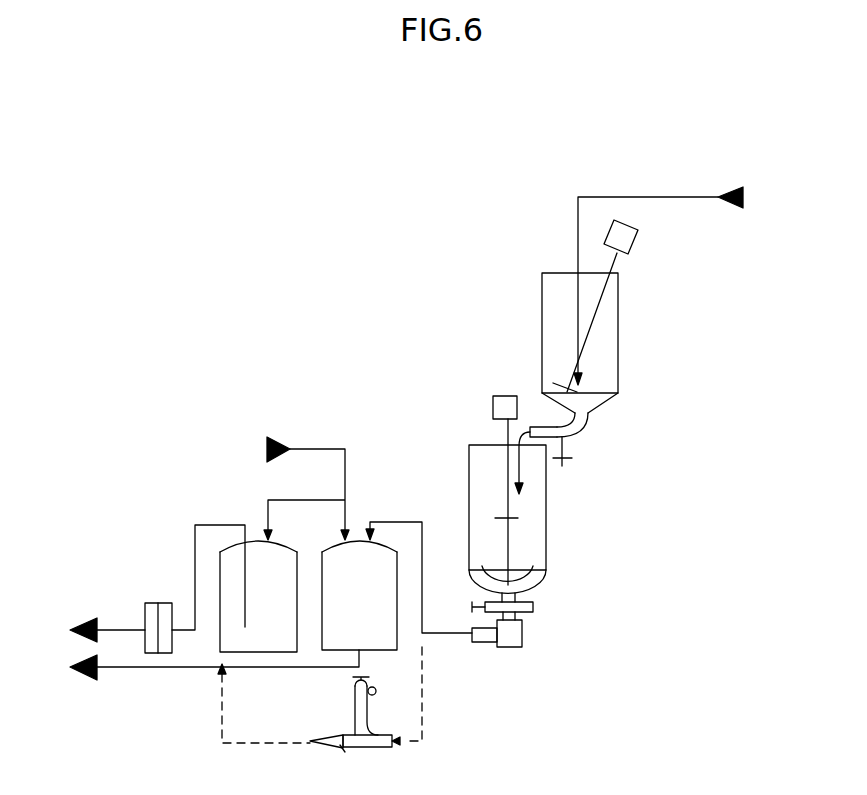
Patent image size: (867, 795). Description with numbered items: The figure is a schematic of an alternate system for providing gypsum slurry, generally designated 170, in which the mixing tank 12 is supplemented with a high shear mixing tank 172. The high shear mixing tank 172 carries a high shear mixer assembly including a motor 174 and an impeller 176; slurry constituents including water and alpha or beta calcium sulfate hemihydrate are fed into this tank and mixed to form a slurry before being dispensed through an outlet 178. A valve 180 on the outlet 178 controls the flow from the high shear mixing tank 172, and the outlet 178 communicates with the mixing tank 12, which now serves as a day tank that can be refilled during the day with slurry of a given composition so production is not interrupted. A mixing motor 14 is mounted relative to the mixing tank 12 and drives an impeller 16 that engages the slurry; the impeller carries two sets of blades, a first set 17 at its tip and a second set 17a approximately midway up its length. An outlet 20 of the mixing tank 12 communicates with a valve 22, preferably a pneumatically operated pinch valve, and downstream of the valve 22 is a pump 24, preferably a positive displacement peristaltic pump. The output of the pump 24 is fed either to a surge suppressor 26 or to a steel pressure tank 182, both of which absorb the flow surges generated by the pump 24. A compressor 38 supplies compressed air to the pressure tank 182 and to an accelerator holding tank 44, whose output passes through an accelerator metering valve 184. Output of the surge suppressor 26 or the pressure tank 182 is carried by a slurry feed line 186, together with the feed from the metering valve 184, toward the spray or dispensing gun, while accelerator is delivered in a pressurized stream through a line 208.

The alternate system for providing gypsum slurry 170 is at (262, 256).
The high shear mixing tank 172 is at (618, 331).
The motor 174 is at (628, 240).
The impeller 176 is at (572, 372).
The mixing motor 14 is at (493, 403).
The mixing tank 12 is at (546, 532).
The impeller 16 is at (508, 537).
The second set of blades 17a is at (496, 518).
The outlet 178 is at (568, 436).
The valve 180 is at (563, 466).
The first set of blades 17 is at (530, 579).
The outlet 20 is at (533, 614).
The pump 24 is at (518, 640).
The valve 22 is at (533, 604).
The surge suppressor 26 is at (373, 747).
The slurry feed line 186 is at (138, 672).
The line 208 is at (118, 628).
The accelerator metering valve 184 is at (163, 603).
The accelerator holding tank 44 is at (290, 601).
The steel pressure tank 182 is at (382, 587).
The compressor 38 is at (267, 450).